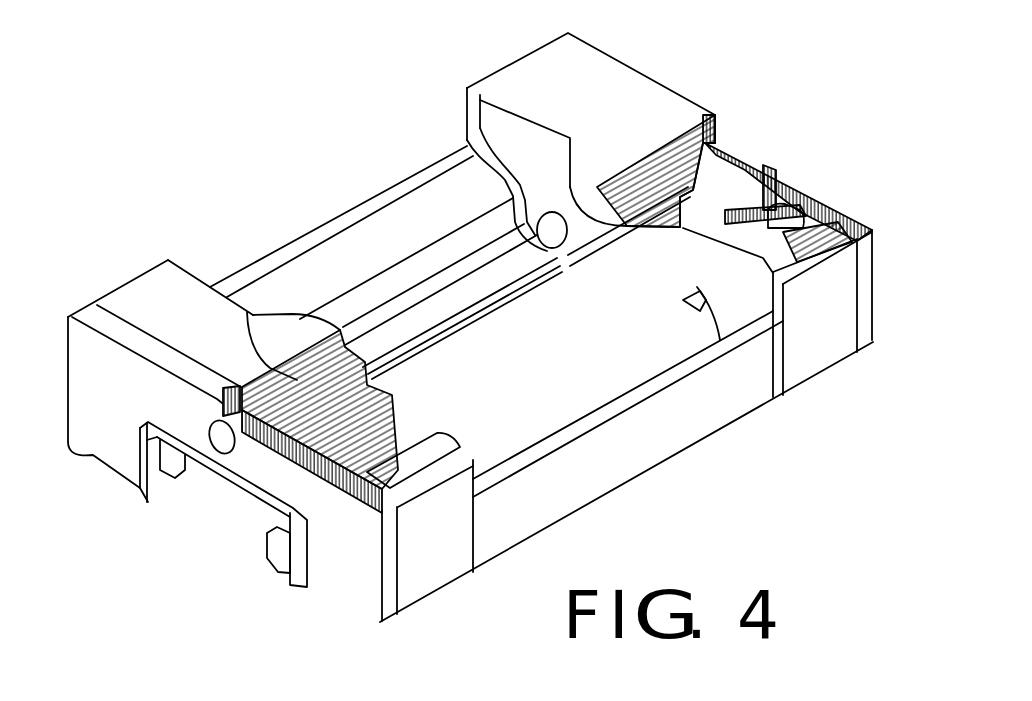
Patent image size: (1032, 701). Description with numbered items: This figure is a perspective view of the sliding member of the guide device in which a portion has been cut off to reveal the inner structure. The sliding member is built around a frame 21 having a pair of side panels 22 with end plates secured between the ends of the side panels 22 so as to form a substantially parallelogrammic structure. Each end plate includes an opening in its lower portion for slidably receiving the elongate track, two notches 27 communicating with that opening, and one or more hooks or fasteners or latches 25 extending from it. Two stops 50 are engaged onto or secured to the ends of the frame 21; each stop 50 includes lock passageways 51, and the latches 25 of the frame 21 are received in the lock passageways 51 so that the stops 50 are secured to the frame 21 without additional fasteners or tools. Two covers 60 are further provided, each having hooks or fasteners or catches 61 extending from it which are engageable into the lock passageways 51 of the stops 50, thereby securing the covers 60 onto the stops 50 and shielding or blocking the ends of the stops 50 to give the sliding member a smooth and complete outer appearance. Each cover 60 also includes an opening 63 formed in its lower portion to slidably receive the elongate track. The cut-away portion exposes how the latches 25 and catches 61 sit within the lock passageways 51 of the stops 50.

The frame 21 is at (707, 438).
The side panels 22 is at (353, 202).
The latches 25 is at (775, 205).
The notches 27 is at (467, 120).
The stops 50 is at (250, 312).
The lock passageways 51 is at (790, 225).
The covers 60 is at (105, 442).
The catches 61 is at (290, 462).
The opening 63 is at (217, 502).